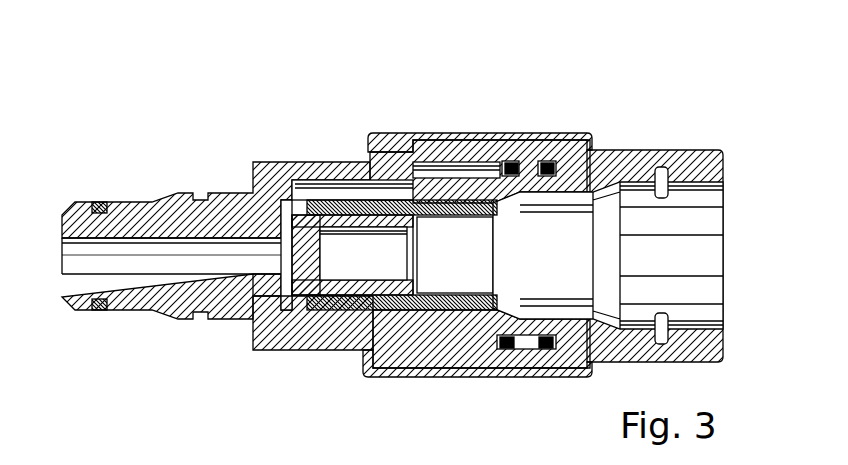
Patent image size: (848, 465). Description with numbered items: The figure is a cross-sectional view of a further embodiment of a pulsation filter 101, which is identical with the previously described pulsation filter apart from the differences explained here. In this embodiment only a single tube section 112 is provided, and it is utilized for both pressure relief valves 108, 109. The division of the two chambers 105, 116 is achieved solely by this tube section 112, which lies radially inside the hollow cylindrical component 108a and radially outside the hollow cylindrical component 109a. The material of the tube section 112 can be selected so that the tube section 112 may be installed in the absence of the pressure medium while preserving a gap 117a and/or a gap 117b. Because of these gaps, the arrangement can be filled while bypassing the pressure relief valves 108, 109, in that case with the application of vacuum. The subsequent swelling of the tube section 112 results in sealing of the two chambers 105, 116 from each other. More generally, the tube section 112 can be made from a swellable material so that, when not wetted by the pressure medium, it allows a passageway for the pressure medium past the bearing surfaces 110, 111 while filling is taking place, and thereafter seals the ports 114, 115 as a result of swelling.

The pulsation filter 101 is at (203, 88).
The chamber 105 is at (283, 193).
The pressure relief valve 108 is at (465, 215).
The hollow cylindrical component 108a is at (460, 200).
The pressure relief valve 109 is at (331, 193).
The hollow cylindrical component 109a is at (357, 300).
The bearing surface 110 is at (428, 215).
The bearing surface 111 is at (398, 277).
The tube section 112 is at (426, 198).
The port 114 is at (268, 352).
The port 115 is at (490, 180).
The chamber 116 is at (410, 367).
The gap 117a is at (447, 200).
The gap 117b is at (330, 318).